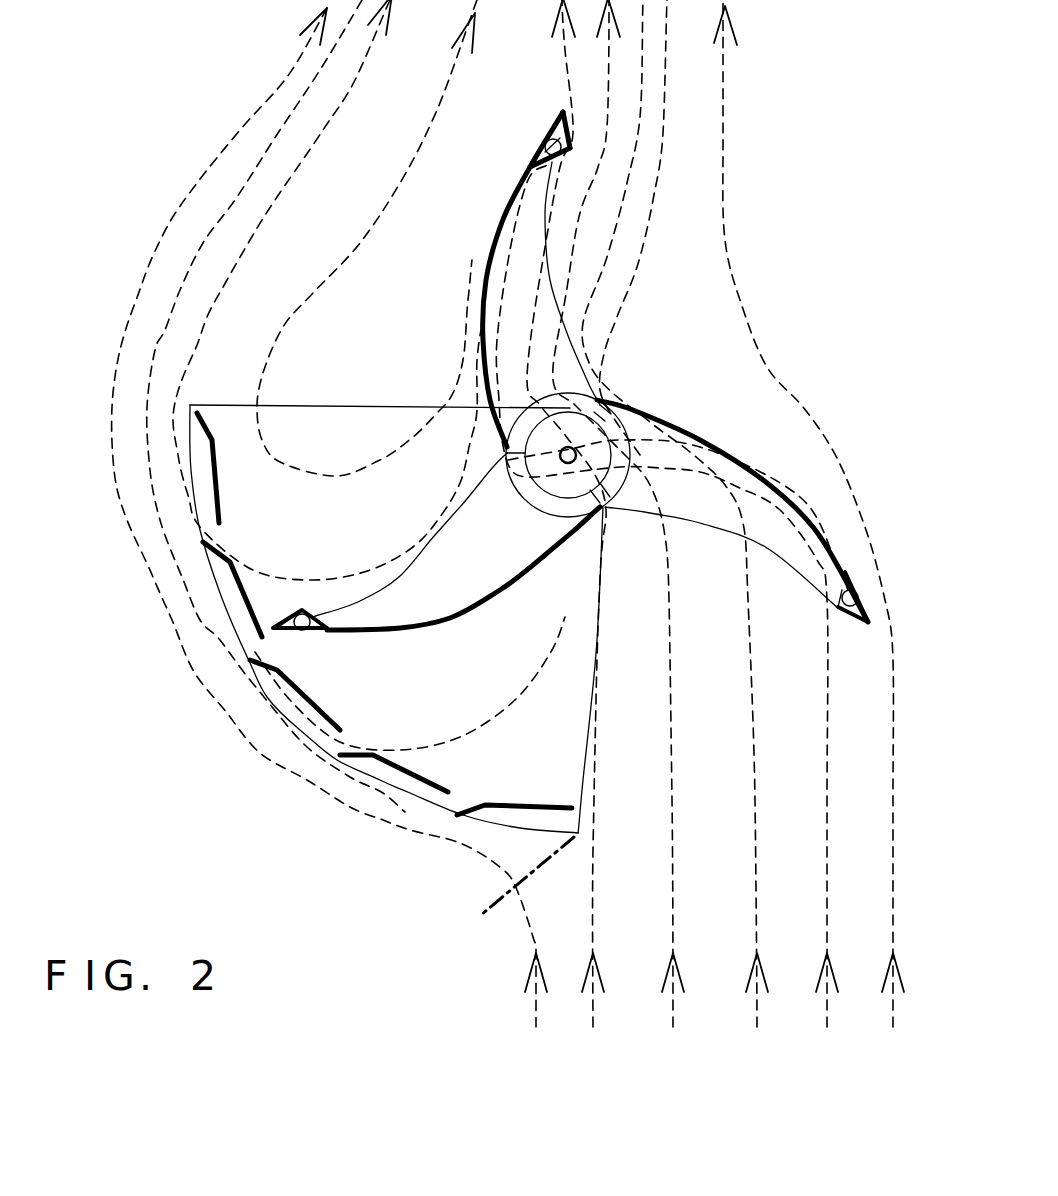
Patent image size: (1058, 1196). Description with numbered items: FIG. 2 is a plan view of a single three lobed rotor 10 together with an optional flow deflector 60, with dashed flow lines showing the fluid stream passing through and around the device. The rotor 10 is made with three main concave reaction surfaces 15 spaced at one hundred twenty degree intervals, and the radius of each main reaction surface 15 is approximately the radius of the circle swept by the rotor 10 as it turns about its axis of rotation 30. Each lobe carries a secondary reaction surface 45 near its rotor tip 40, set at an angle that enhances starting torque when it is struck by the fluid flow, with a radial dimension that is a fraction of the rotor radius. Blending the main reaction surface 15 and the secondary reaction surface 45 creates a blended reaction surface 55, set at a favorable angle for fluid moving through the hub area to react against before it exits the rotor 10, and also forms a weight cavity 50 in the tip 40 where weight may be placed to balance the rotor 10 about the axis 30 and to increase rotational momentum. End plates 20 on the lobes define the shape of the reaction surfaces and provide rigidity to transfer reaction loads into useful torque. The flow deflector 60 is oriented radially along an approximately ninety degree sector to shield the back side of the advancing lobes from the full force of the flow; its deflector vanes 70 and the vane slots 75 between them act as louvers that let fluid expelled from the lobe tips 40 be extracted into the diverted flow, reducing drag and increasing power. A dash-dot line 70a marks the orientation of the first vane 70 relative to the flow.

The three lobed rotor 10 is at (507, 327).
The main reaction surface 15 is at (487, 252).
The end plate 20 is at (557, 287).
The axis of rotation 30 is at (566, 452).
The rotor tip 40 is at (563, 112).
The secondary reaction surface 45 is at (573, 132).
The weight cavity 50 is at (570, 148).
The blended reaction surface 55 is at (560, 163).
The flow deflector 60 is at (405, 798).
The deflector vane 70 is at (303, 698).
The vane reference line 70a is at (505, 912).
The vane slot 75 is at (260, 653).